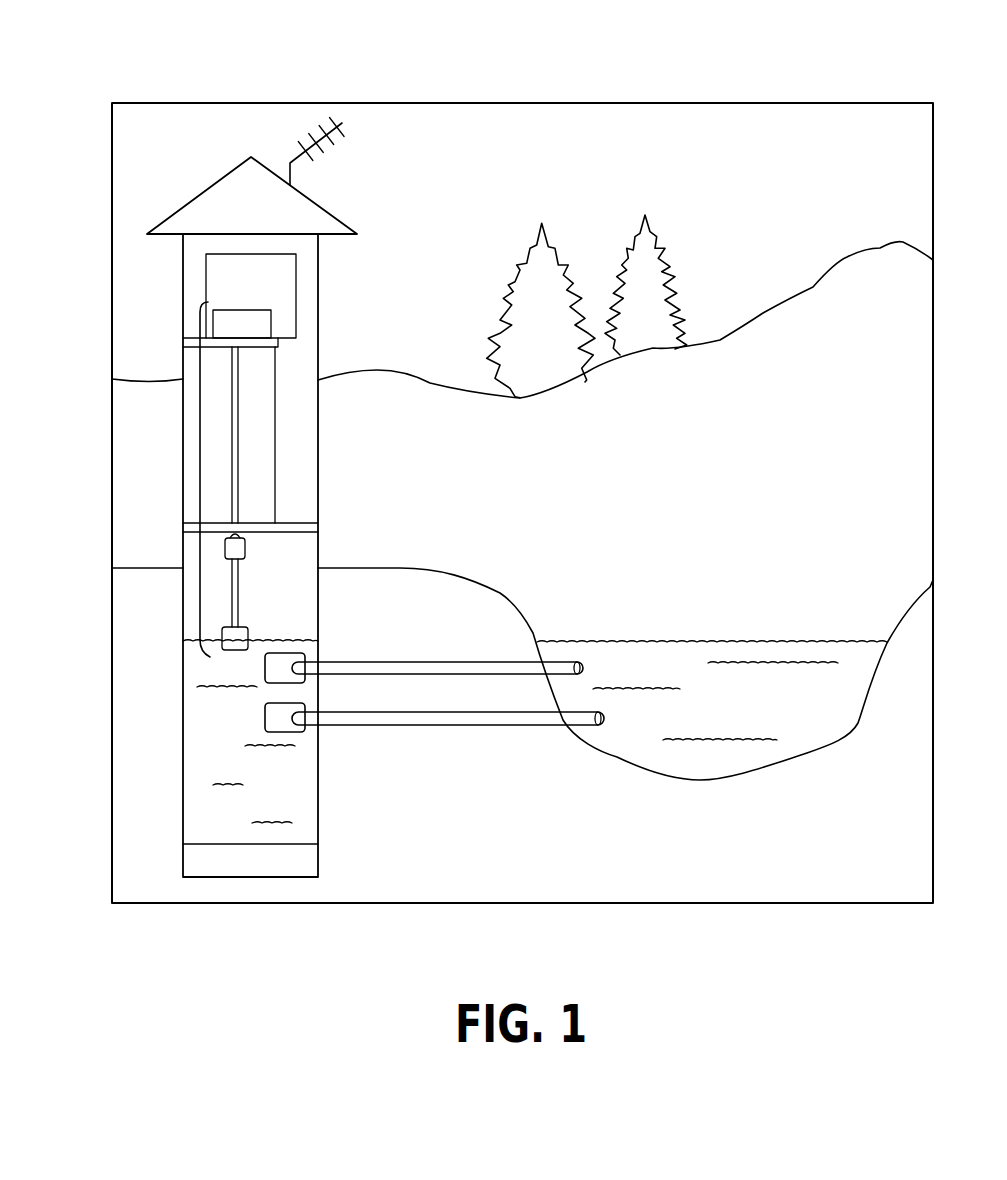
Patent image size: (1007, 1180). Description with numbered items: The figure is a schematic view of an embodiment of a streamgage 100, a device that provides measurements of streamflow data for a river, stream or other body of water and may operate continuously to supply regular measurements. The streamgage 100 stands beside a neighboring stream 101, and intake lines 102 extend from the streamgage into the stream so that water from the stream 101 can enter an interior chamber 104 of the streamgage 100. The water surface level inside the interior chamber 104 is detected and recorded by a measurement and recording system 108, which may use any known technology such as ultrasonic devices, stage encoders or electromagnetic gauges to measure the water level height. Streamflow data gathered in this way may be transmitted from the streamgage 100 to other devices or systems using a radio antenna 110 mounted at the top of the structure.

The streamgage 100 is at (380, 195).
The stream 101 is at (680, 660).
The intake lines 102 is at (452, 751).
The interior chamber 104 is at (288, 594).
The measurement and recording system 108 is at (197, 483).
The radio antenna 110 is at (297, 153).